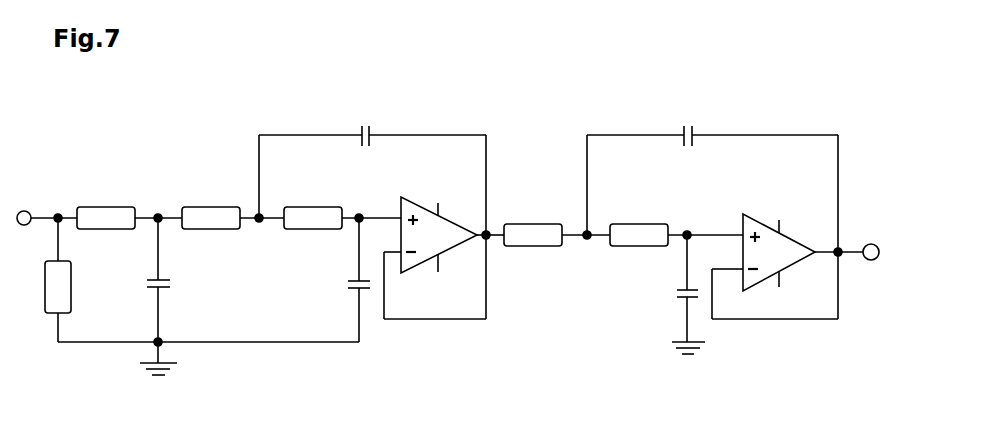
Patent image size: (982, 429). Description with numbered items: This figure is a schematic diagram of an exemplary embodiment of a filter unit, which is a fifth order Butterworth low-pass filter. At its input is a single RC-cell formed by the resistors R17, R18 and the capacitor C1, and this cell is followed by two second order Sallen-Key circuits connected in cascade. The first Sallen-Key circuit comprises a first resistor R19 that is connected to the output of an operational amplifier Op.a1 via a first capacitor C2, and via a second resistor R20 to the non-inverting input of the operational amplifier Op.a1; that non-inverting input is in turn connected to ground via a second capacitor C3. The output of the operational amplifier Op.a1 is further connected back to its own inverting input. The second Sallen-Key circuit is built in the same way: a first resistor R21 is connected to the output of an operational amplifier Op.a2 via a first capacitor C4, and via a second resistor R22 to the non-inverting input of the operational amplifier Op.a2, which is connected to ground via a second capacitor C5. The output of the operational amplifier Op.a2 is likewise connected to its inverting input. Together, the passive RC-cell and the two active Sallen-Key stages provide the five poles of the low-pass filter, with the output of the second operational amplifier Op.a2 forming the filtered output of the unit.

The resistor R17 is at (81, 280).
The resistor R18 is at (106, 207).
The first resistor R19 is at (211, 207).
The second resistor R20 is at (313, 207).
The first resistor R21 is at (533, 224).
The second resistor R22 is at (639, 224).
The capacitor C1 is at (174, 280).
The first capacitor C2 is at (372, 211).
The second capacitor C3 is at (345, 280).
The first capacitor C4 is at (712, 212).
The second capacitor C5 is at (670, 288).
The operational amplifier Op.a1 is at (435, 244).
The operational amplifier Op.a2 is at (775, 255).